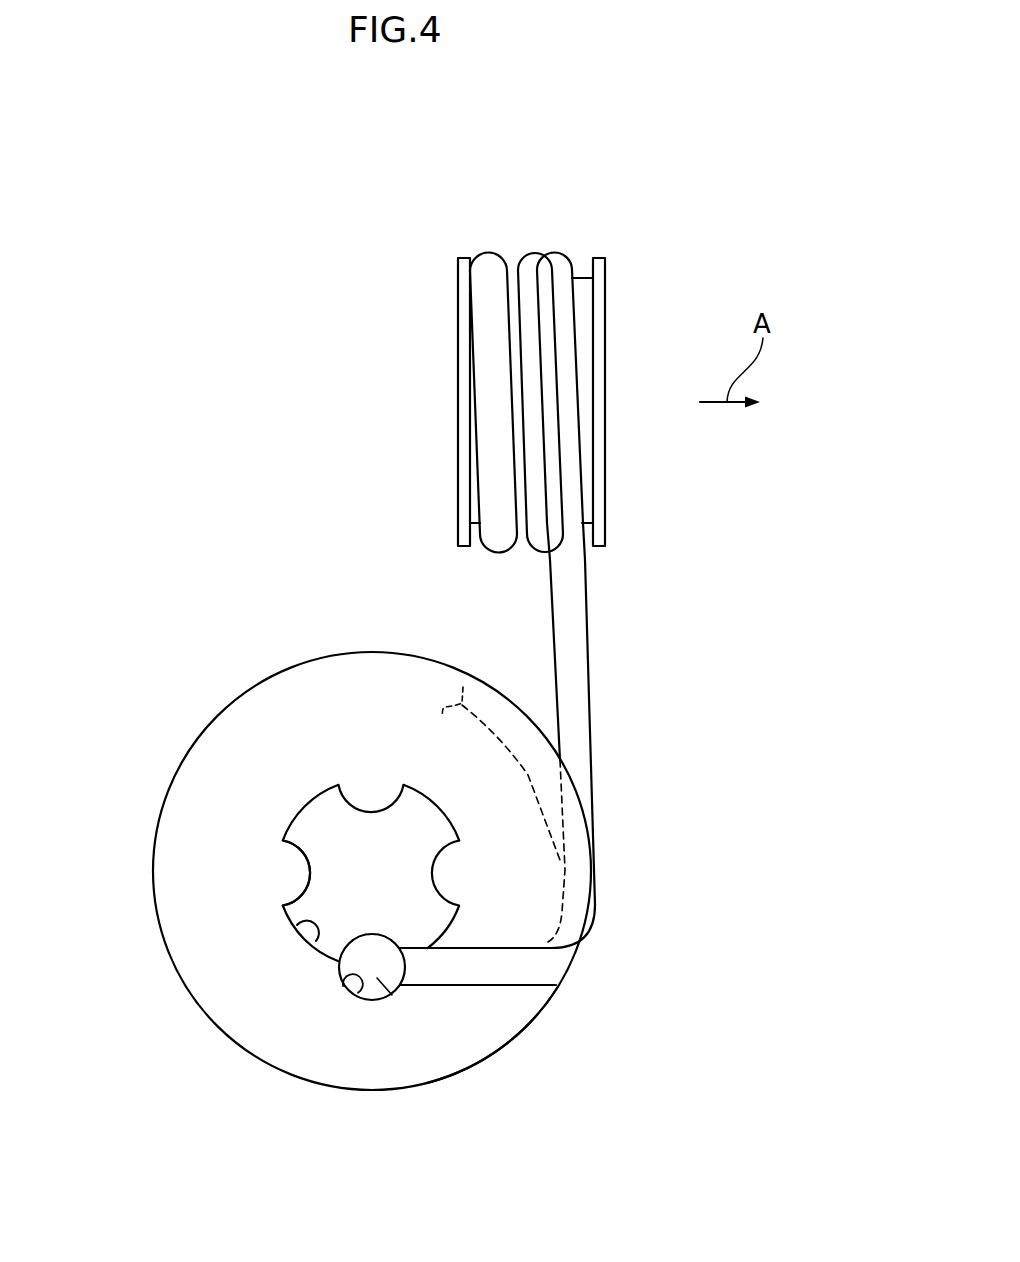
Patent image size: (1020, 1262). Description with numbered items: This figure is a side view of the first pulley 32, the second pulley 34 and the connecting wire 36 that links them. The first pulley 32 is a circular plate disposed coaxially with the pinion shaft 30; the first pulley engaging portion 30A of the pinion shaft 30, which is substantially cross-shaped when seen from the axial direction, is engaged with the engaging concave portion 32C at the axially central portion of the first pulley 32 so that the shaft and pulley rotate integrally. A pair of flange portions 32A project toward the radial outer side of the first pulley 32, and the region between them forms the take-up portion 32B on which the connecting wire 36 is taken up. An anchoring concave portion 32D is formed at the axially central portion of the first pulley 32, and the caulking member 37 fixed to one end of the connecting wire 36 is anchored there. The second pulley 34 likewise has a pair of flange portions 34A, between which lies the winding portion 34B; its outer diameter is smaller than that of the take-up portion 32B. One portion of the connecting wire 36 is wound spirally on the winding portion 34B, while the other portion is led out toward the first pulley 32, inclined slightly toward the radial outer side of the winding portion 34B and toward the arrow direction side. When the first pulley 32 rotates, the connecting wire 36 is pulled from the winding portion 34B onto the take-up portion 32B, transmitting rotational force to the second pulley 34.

The pinion shaft 30 is at (322, 823).
The first pulley engaging portion 30A is at (335, 873).
The first pulley 32 is at (226, 1045).
The flange portion 32A is at (500, 1057).
The take-up portion 32B is at (527, 765).
The engaging concave portion 32C is at (312, 945).
The anchoring concave portion 32D is at (345, 982).
The second pulley 34 is at (455, 261).
The flange portion 34A is at (467, 259).
The winding portion 34B is at (585, 262).
The connecting wire 36 is at (590, 650).
The caulking member 37 is at (392, 1000).